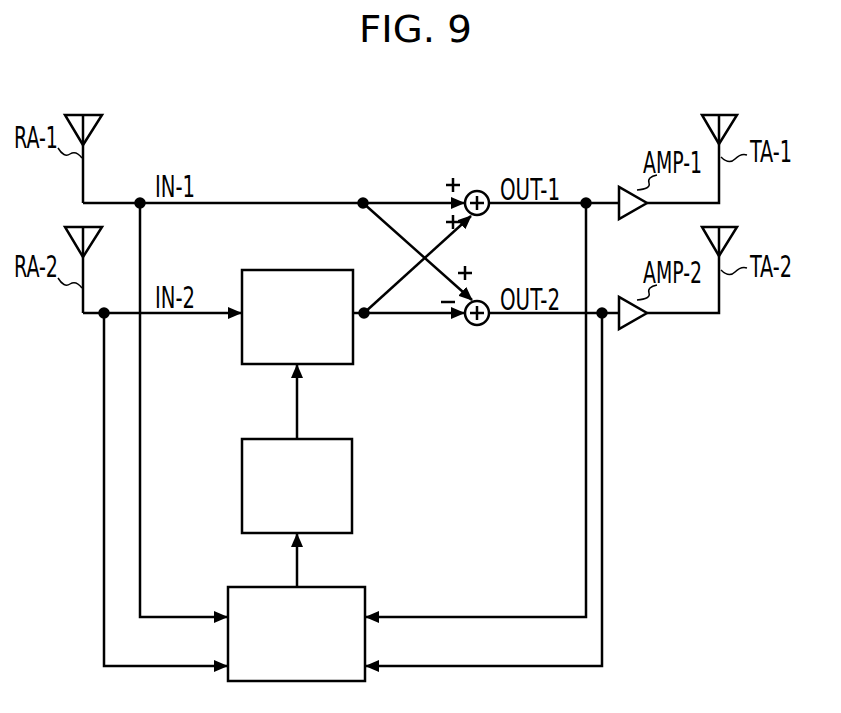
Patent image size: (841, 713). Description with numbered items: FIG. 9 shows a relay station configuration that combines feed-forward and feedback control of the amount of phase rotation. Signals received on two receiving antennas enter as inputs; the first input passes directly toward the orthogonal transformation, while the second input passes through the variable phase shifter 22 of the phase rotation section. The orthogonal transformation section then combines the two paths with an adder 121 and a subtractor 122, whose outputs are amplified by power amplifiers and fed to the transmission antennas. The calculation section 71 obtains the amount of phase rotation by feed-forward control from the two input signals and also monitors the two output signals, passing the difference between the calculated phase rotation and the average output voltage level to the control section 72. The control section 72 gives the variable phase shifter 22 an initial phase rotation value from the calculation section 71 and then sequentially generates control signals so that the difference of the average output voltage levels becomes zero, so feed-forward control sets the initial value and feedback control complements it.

The variable phase shifter 22 is at (354, 340).
The adder 121 is at (477, 190).
The subtractor 122 is at (477, 326).
The control section 72 is at (353, 482).
The calculation section 71 is at (366, 590).